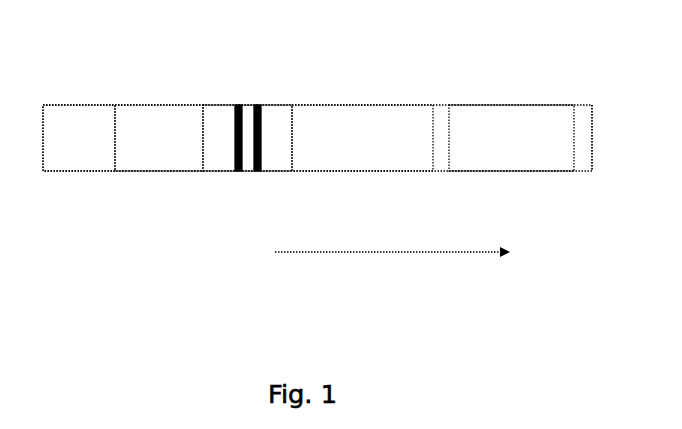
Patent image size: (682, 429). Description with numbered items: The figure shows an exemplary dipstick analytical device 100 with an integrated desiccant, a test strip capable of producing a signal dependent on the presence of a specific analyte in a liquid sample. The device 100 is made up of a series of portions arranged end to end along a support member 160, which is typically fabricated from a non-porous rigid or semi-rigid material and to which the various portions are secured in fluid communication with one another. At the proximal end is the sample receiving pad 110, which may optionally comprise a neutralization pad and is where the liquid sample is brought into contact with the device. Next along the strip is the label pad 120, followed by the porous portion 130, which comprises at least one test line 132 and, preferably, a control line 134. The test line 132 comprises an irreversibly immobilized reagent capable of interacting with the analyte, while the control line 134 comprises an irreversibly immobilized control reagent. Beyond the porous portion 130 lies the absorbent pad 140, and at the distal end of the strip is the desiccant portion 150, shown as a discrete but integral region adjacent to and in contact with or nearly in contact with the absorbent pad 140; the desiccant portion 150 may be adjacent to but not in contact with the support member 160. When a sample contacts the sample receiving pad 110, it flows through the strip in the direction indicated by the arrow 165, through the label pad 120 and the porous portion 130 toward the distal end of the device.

The device 100 is at (70, 56).
The sample receiving pad 110 is at (76, 146).
The label pad 120 is at (162, 152).
The porous portion 130 is at (251, 133).
The test line 132 is at (237, 105).
The control line 134 is at (257, 105).
The absorbent pad 140 is at (360, 136).
The desiccant portion 150 is at (515, 138).
The support member 160 is at (592, 105).
The arrow 165 is at (363, 252).